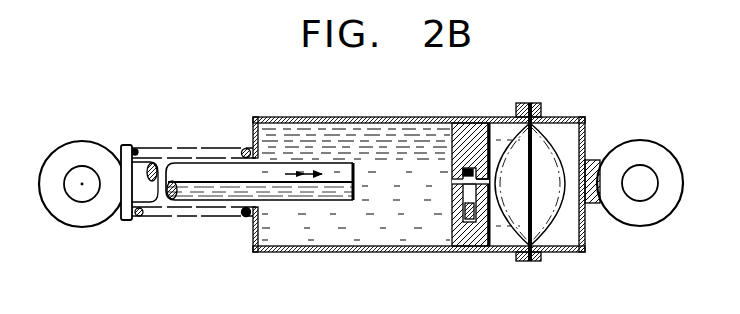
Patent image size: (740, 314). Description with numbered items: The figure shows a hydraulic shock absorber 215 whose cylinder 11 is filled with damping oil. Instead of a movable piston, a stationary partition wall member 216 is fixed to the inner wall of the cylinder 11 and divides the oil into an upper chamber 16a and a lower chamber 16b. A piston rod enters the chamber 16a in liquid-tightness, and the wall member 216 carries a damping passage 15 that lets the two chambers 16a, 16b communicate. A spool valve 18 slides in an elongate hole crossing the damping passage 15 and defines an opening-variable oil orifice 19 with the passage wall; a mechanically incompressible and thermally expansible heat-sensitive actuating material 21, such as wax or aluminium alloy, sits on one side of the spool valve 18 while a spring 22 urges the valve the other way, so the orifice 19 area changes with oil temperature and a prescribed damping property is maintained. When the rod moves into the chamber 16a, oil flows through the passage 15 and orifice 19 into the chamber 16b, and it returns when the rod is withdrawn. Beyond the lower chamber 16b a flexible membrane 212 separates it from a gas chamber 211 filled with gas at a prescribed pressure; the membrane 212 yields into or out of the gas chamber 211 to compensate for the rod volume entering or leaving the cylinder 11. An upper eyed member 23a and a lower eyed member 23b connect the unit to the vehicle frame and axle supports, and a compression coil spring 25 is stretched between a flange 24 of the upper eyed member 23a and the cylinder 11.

The cylinder 11 is at (266, 117).
The damping passage 15 is at (463, 191).
The upper chamber 16a is at (298, 130).
The lower chamber 16b is at (501, 128).
The spool valve 18 is at (470, 185).
The oil orifice 19 is at (478, 178).
The heat-sensitive actuating material 21 is at (466, 212).
The spring 22 is at (463, 172).
The upper eyed member 23a is at (70, 150).
The lower eyed member 23b is at (634, 148).
The flange 24 is at (125, 148).
The compression coil spring 25 is at (242, 150).
The gas chamber 211 is at (572, 226).
The flexible membrane 212 is at (532, 218).
The shock absorber 215 is at (145, 230).
The stationary partition wall member 216 is at (472, 236).